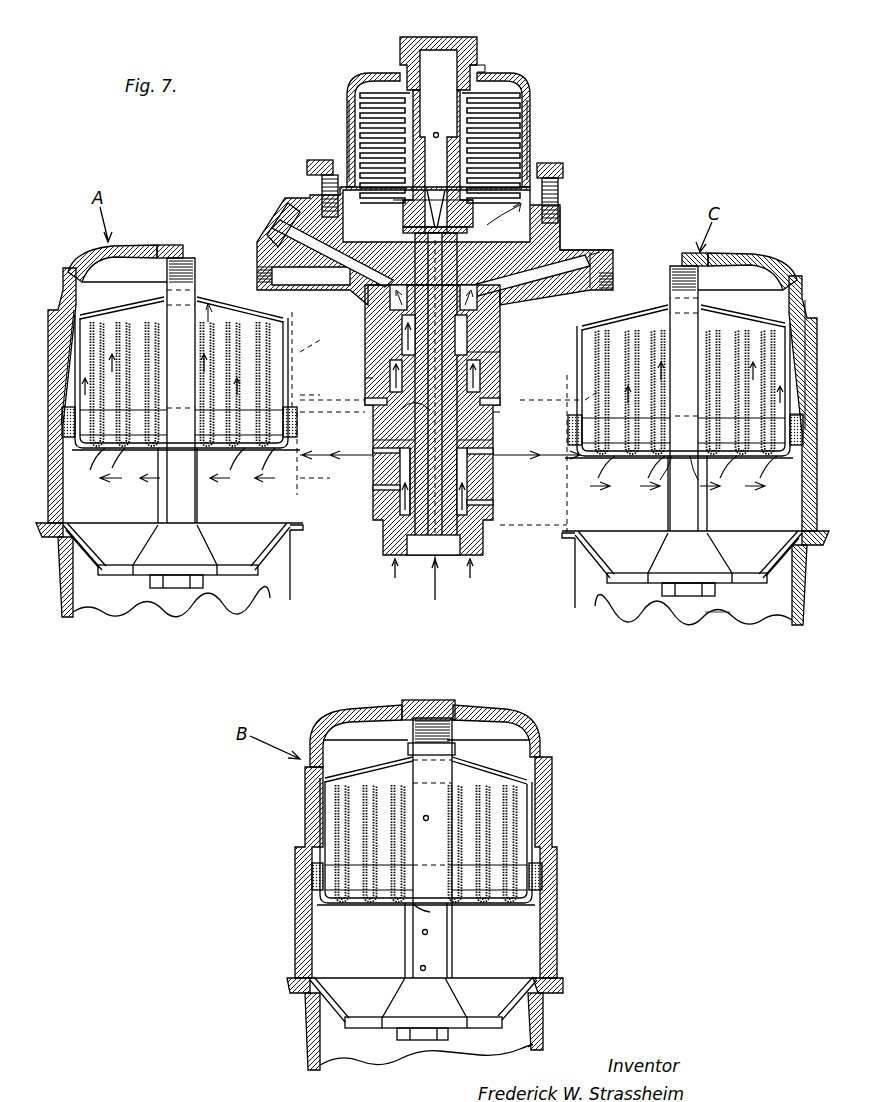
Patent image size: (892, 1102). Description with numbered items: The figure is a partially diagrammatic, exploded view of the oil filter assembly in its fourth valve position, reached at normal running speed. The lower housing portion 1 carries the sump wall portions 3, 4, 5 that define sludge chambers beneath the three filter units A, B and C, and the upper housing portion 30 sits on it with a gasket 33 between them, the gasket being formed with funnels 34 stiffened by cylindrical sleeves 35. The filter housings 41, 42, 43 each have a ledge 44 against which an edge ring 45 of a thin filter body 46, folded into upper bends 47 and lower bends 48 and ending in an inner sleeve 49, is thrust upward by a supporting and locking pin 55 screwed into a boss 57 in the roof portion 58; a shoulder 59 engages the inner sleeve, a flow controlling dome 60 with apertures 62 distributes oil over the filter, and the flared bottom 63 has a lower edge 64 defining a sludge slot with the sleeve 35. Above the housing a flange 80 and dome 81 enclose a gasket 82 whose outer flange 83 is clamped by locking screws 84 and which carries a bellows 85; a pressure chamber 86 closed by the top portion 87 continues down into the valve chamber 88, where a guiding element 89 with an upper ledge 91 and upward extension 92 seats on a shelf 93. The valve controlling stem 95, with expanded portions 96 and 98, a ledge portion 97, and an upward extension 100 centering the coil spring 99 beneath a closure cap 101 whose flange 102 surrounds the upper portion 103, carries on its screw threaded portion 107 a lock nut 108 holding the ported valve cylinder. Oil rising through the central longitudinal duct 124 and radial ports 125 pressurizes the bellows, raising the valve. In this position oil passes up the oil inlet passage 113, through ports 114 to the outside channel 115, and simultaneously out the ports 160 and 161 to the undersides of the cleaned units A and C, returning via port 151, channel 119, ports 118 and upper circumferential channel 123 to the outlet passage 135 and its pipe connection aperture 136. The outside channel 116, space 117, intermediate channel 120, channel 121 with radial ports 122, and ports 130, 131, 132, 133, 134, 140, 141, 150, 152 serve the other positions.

The lower housing portion 1 is at (58, 608).
The sump wall portion 3 is at (112, 612).
The sump wall portion 4 is at (392, 1057).
The sump wall portion 5 is at (750, 625).
The upper housing portion 30 is at (52, 462).
The gasket 33 is at (290, 982).
The funnel 34 is at (80, 553).
The cylindrical sleeve 35 is at (103, 576).
The filter housing 41 is at (62, 375).
The filter housing 42 is at (296, 908).
The filter housing 43 is at (800, 348).
The ledge 44 is at (796, 418).
The edge ring 45 is at (62, 420).
The filter body 46 is at (97, 358).
The upper bend 47 is at (214, 320).
The lower bend 48 is at (95, 450).
The inner sleeve 49 is at (679, 469).
The supporting and locking pin 55 is at (158, 502).
The boss 57 is at (600, 262).
The roof portion 58 is at (92, 262).
The shoulder 59 is at (445, 906).
The flow controlling dome 60 is at (110, 312).
The aperture 62 is at (160, 300).
The flared bottom 63 is at (150, 540).
The lower edge 64 is at (716, 596).
The flange 80 is at (565, 212).
The dome 81 is at (358, 82).
The gasket 82 is at (352, 100).
The outer flange 83 is at (560, 188).
The locking screw 84 is at (560, 166).
The bellows 85 is at (524, 128).
The pressure chamber 86 is at (555, 230).
The top portion 87 is at (585, 268).
The valve chamber 88 is at (478, 300).
The guiding element 89 is at (390, 297).
The upper ledge 91 is at (500, 222).
The upward extension 92 is at (570, 247).
The shelf 93 is at (540, 278).
The valve controlling stem 95 is at (415, 255).
The expanded portion 96 is at (384, 216).
The ledge portion 97 is at (403, 232).
The expanded portion 98 is at (320, 190).
The coil spring 99 is at (372, 158).
The upward extension 100 is at (438, 147).
The closure cap 101 is at (410, 45).
The downwardly extending flange 102 is at (500, 110).
The upper portion 103 is at (478, 64).
The screw threaded portion 107 is at (455, 545).
The lock nut 108 is at (410, 535).
The oil inlet passage 113 is at (400, 500).
The port 114 is at (470, 432).
The outside channel 115 is at (400, 430).
The outside channel 116 is at (400, 472).
The space 117 is at (468, 338).
The radial port 118 is at (428, 404).
The circumferential channel 119 is at (365, 402).
The intermediate circumferential channel 120 is at (500, 400).
The circumferential channel 121 is at (482, 366).
The radial port 122 is at (480, 380).
The upper circumferential channel 123 is at (470, 324).
The central longitudinal duct 124 is at (430, 545).
The radial port 125 is at (436, 197).
The port 130 is at (373, 488).
The port 131 is at (380, 392).
The port 132 is at (430, 820).
The port 133 is at (428, 968).
The duct 134 is at (495, 505).
The outlet passage 135 is at (330, 262).
The pipe connection aperture 136 is at (258, 216).
The port 140 is at (430, 933).
The port 141 is at (500, 353).
The port 150 is at (475, 470).
The port 151 is at (496, 410).
The port 152 is at (372, 399).
The port 160 is at (373, 455).
The duct 161 is at (495, 457).